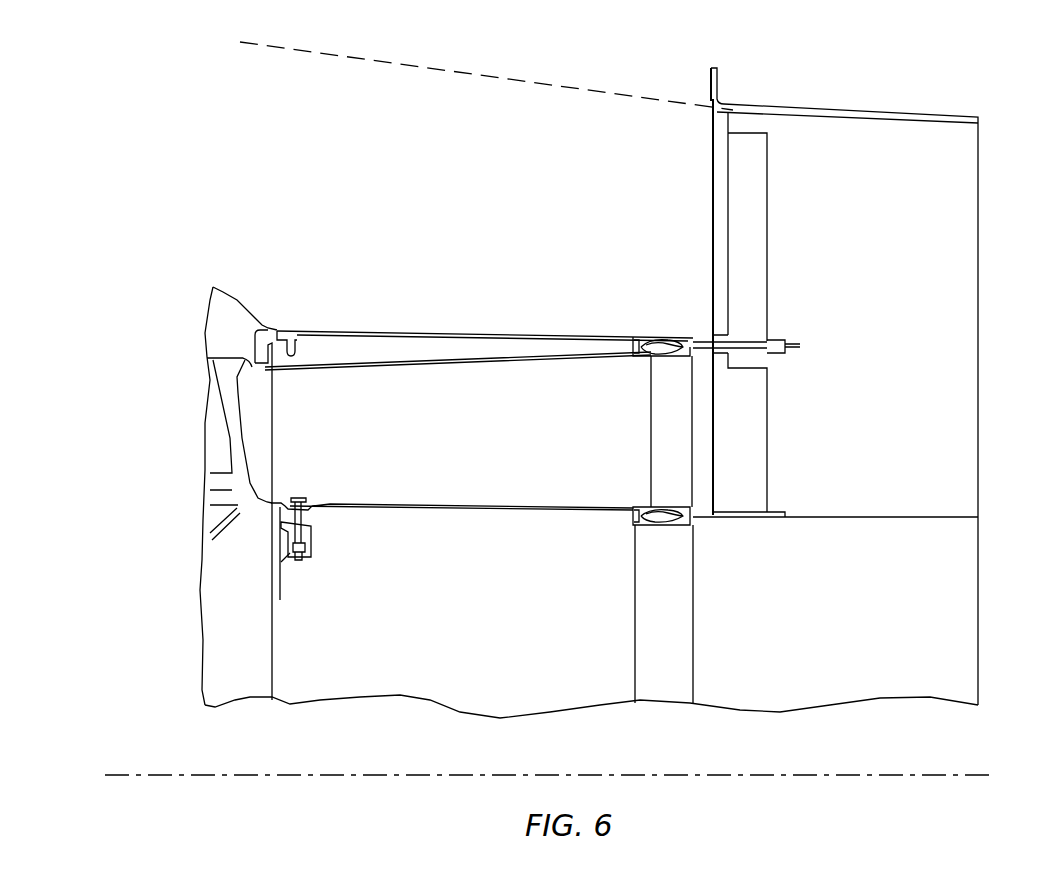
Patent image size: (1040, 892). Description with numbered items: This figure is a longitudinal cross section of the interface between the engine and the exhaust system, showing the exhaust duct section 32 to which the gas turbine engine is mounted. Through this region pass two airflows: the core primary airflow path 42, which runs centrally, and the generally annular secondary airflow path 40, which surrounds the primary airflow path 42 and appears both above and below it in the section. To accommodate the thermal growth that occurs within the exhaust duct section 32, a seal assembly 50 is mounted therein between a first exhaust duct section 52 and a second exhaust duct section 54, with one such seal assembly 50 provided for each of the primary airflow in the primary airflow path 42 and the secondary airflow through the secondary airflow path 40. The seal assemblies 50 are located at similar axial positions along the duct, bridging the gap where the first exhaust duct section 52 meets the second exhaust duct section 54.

The exhaust duct section 32 is at (468, 152).
The secondary airflow path 40 is at (199, 184).
The primary airflow path 42 is at (176, 429).
The seal assembly 50 is at (656, 330).
The first exhaust duct section 52 is at (373, 313).
The second exhaust duct section 54 is at (833, 90).